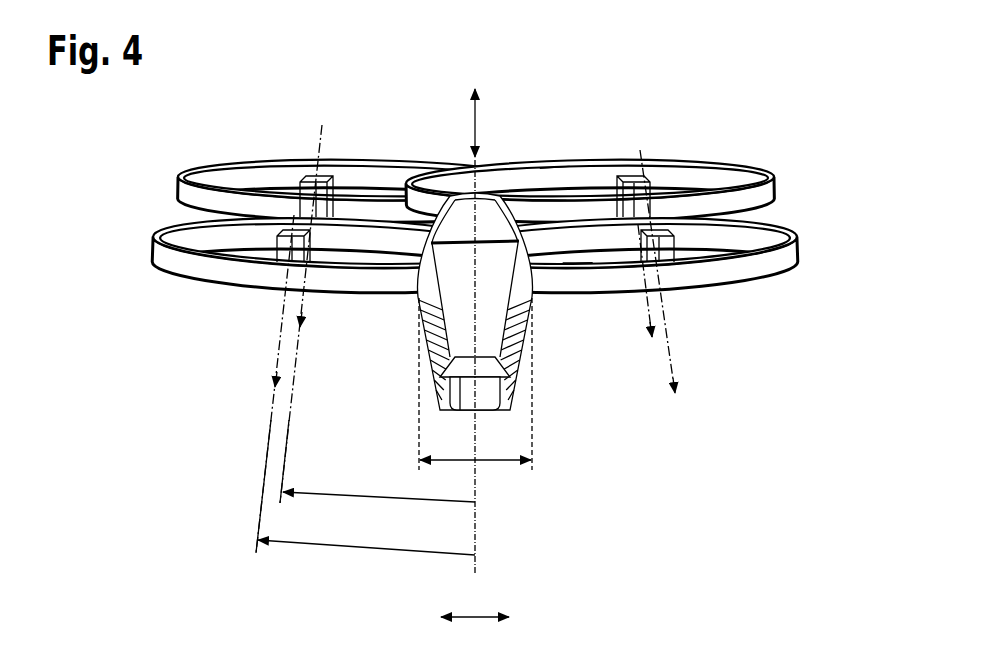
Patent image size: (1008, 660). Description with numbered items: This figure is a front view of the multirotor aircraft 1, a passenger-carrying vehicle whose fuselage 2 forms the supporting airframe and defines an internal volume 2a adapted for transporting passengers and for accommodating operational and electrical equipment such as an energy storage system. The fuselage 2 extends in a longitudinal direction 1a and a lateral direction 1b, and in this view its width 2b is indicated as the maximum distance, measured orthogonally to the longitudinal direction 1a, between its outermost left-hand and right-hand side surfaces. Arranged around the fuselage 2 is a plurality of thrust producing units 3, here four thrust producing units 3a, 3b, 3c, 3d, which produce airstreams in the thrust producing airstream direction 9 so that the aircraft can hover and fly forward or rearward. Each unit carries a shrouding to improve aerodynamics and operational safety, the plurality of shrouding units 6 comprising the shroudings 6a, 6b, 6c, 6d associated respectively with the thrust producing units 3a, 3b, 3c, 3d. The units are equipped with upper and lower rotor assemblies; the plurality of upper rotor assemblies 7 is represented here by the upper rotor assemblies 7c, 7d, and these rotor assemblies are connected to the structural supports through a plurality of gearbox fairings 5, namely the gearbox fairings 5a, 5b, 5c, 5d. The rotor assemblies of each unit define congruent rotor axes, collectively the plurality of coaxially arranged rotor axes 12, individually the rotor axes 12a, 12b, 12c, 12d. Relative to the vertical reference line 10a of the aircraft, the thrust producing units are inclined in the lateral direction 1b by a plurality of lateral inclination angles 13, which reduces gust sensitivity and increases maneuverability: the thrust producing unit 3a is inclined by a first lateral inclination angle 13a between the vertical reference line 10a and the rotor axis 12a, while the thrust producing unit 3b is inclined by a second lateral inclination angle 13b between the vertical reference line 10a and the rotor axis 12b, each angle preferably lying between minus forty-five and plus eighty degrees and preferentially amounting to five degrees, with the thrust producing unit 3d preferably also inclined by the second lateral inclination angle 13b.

The multirotor aircraft 1 is at (502, 103).
The longitudinal direction 1a is at (473, 118).
The lateral direction 1b is at (475, 617).
The fuselage 2 is at (455, 195).
The internal volume 2a is at (490, 322).
The width 2b is at (495, 462).
The plurality of thrust producing units 3 is at (748, 157).
The thrust producing unit 3a is at (162, 273).
The thrust producing unit 3b is at (188, 163).
The thrust producing unit 3c is at (792, 268).
The thrust producing unit 3d is at (760, 160).
The plurality of gearbox fairings 5 is at (668, 172).
The gearbox fairing 5a is at (277, 237).
The gearbox fairing 5b is at (312, 178).
The gearbox fairing 5c is at (674, 236).
The gearbox fairing 5d is at (663, 170).
The plurality of shrouding units 6 is at (785, 177).
The shrouding 6a is at (168, 250).
The shrouding 6b is at (368, 190).
The shrouding 6c is at (780, 250).
The shrouding 6d is at (582, 188).
The plurality of upper rotor assemblies 7 is at (553, 188).
The upper rotor assembly 7c is at (577, 267).
The upper rotor assembly 7d is at (545, 207).
The thrust producing airstream direction 9 is at (305, 310).
The vertical reference line 10a is at (475, 537).
The plurality of coaxially arranged rotor axes 12 is at (627, 132).
The rotor axis 12a is at (293, 213).
The rotor axis 12b is at (322, 125).
The rotor axis 12c is at (670, 210).
The rotor axis 12d is at (640, 150).
The plurality of lateral inclination angles 13 is at (268, 562).
The first lateral inclination angle 13a is at (355, 552).
The second lateral inclination angle 13b is at (358, 498).